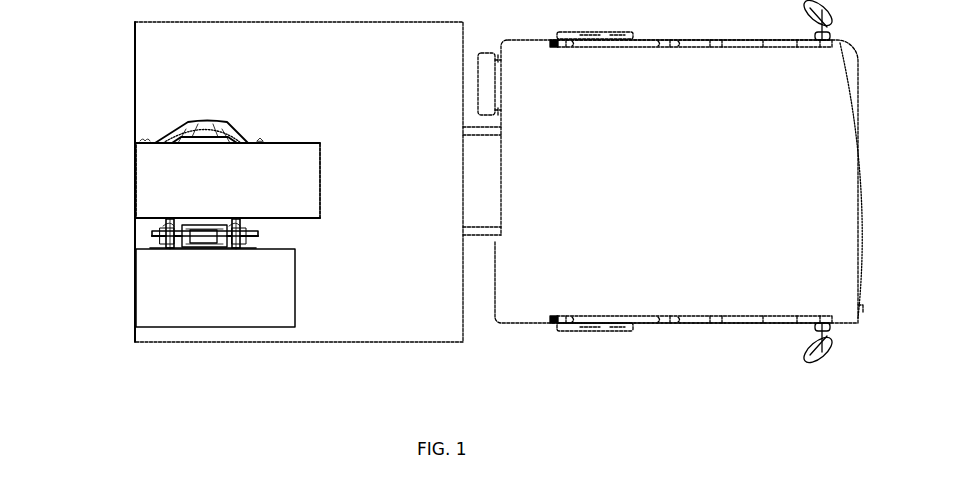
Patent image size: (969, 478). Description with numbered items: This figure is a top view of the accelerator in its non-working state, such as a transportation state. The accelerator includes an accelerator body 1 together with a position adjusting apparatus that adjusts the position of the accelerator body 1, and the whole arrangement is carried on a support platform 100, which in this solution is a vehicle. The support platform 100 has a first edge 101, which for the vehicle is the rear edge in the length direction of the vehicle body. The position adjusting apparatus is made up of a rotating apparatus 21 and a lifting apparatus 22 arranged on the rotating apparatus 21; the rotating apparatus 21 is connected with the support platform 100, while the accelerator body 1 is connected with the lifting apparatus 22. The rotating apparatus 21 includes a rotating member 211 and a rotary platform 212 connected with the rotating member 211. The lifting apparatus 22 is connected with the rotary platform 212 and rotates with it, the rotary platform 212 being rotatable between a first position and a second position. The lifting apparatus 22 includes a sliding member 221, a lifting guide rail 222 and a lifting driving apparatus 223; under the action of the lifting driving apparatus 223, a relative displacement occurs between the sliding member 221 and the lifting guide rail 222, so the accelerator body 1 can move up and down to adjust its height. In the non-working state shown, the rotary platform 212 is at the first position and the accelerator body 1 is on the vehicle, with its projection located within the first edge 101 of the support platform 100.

The support platform 100 is at (142, 43).
The first edge 101 is at (132, 72).
The rotating apparatus 21 is at (98, 127).
The rotating member 211 is at (160, 136).
The rotary platform 212 is at (142, 170).
The lifting apparatus 22 is at (126, 202).
The sliding member 221 is at (163, 236).
The lifting guide rail 222 is at (164, 241).
The lifting driving apparatus 223 is at (237, 246).
The accelerator body 1 is at (165, 297).